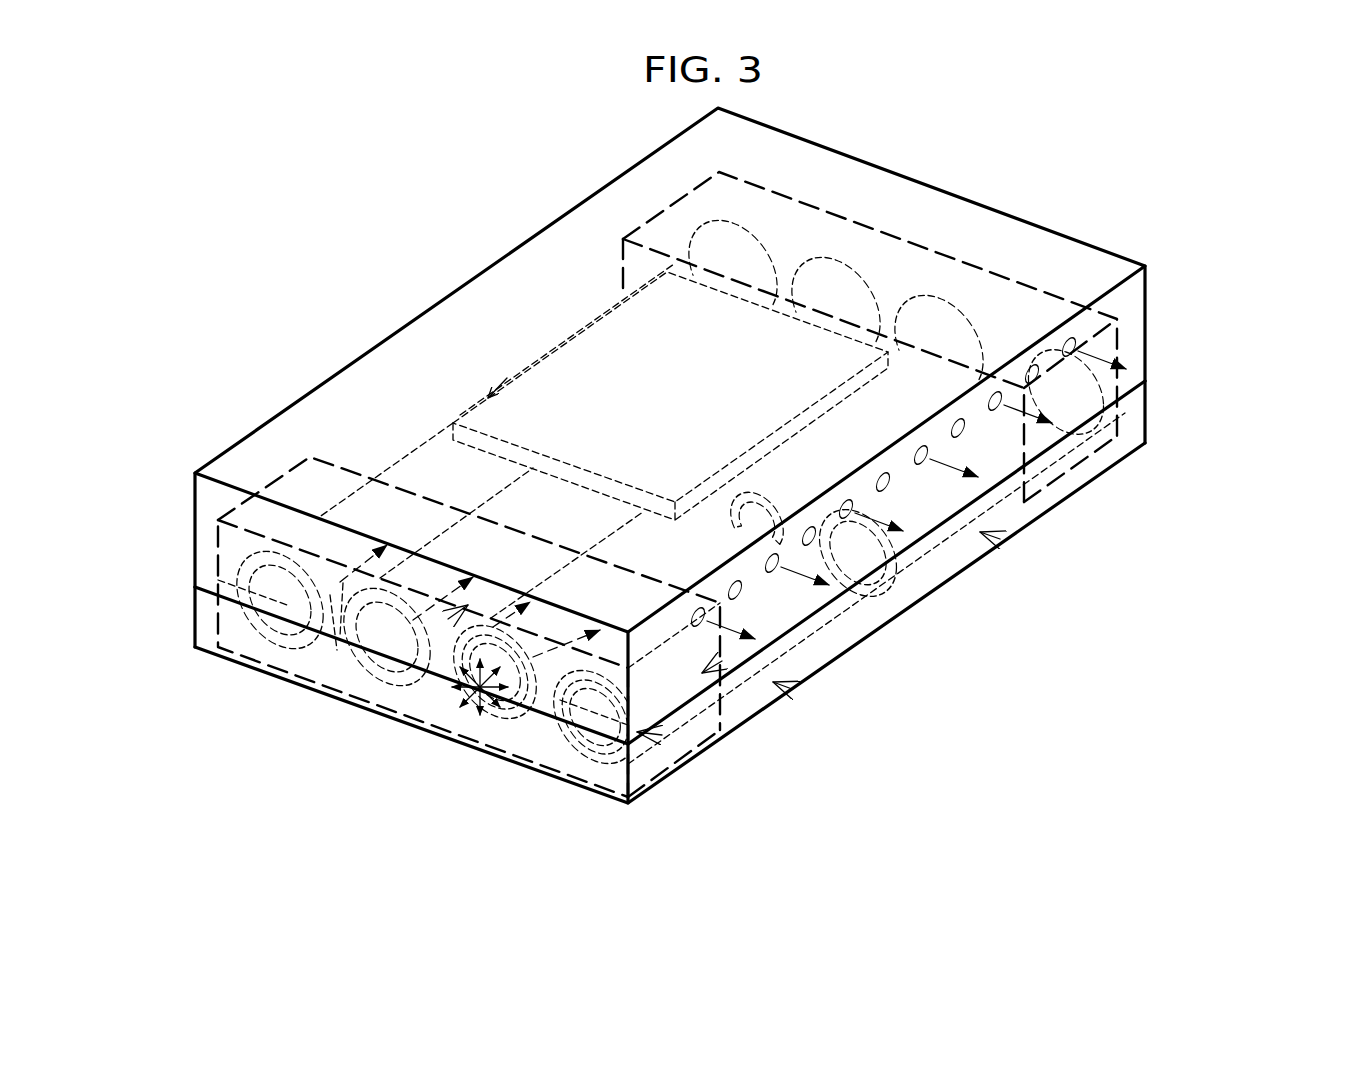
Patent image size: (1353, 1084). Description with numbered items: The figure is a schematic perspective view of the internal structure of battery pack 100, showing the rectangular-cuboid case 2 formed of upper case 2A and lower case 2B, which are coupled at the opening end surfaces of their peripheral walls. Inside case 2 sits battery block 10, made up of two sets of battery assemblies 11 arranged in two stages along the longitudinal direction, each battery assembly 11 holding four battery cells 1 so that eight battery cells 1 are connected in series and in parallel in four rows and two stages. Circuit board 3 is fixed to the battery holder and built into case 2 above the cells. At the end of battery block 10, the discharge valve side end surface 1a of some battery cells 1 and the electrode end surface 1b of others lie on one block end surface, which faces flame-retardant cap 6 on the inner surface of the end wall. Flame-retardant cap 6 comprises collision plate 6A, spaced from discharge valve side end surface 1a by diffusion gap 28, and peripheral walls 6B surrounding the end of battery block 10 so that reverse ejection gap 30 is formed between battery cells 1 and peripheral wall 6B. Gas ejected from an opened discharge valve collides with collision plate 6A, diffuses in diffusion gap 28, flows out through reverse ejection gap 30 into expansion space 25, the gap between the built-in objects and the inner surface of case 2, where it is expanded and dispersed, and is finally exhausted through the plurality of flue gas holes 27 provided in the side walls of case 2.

The battery pack 100 is at (259, 200).
The case 2 is at (1248, 125).
The upper case 2A is at (1037, 178).
The lower case 2B is at (1173, 407).
The battery cell 1 is at (409, 439).
The discharge valve side end surface 1a is at (597, 720).
The electrode end surface 1b is at (277, 603).
The circuit board 3 is at (581, 365).
The flame-retardant cap 6 is at (658, 191).
The collision plate 6A is at (448, 620).
The peripheral wall 6B is at (288, 630).
The expansion space 25 is at (433, 640).
The flue gas hole 27 is at (966, 430).
The diffusion gap 28 is at (665, 745).
The reverse ejection gap 30 is at (722, 661).
The battery block 10 is at (1090, 663).
The battery assembly 11 is at (1000, 539).